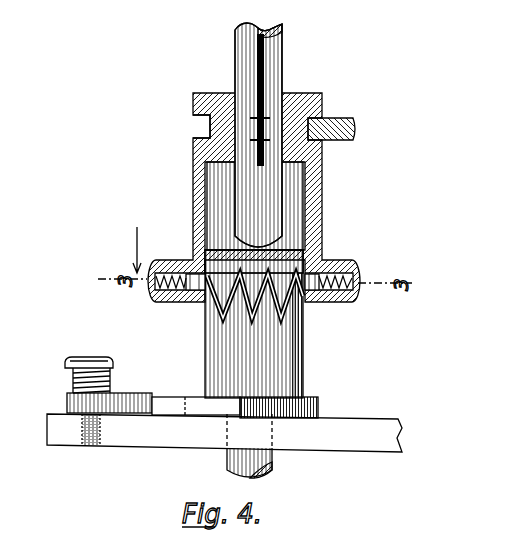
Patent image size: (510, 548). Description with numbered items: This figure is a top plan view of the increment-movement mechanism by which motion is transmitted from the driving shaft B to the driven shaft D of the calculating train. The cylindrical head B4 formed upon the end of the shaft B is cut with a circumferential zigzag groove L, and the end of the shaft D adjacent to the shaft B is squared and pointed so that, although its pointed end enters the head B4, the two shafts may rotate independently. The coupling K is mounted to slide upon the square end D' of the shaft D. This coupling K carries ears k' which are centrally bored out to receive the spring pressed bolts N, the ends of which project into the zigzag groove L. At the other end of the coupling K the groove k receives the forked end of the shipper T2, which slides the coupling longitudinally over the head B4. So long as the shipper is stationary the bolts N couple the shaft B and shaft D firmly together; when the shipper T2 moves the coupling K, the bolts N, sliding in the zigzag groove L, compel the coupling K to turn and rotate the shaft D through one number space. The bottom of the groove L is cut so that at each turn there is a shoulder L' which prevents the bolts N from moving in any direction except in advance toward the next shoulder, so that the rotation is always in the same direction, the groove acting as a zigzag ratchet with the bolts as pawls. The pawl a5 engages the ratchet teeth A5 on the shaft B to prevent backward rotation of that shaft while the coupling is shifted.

The shaft D is at (272, 135).
The coupling-shipper T2 is at (355, 118).
The groove k is at (178, 126).
The square end D' is at (217, 206).
The coupling K is at (322, 205).
The zigzag groove L is at (230, 241).
The spring pressed bolts N is at (308, 275).
The ears k' is at (245, 302).
The shoulder L' is at (234, 303).
The cylindrical head B4 is at (303, 353).
The pawl a5 is at (200, 407).
The ratchet teeth A5 is at (303, 397).
The shaft B is at (275, 467).